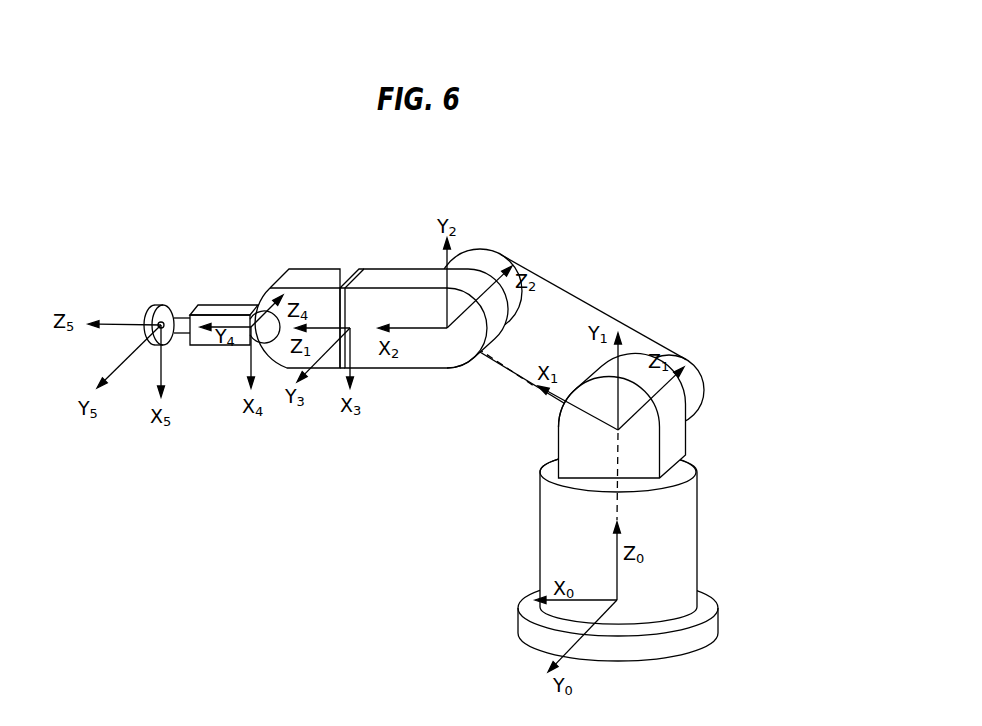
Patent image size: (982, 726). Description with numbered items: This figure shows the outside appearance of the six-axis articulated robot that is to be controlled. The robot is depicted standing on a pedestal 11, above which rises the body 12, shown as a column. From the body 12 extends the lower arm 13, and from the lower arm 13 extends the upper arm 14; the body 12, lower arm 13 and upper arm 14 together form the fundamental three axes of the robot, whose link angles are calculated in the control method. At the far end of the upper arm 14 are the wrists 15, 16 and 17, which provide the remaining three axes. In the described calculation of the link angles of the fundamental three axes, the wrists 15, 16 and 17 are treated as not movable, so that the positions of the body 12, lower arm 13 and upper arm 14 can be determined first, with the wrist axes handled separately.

The pedestal 11 is at (717, 617).
The body 12 is at (697, 511).
The lower arm 13 is at (580, 303).
The upper arm 14 is at (393, 277).
The wrist 15 is at (280, 283).
The wrist 16 is at (213, 347).
The wrist 17 is at (150, 310).